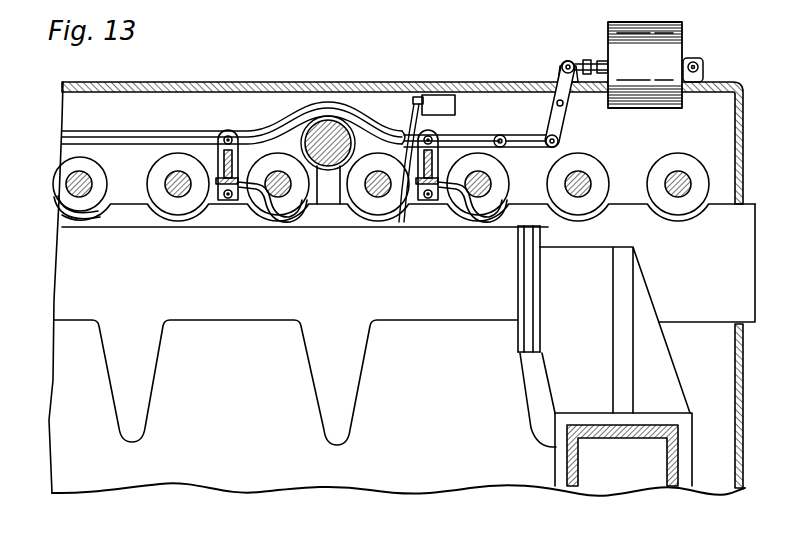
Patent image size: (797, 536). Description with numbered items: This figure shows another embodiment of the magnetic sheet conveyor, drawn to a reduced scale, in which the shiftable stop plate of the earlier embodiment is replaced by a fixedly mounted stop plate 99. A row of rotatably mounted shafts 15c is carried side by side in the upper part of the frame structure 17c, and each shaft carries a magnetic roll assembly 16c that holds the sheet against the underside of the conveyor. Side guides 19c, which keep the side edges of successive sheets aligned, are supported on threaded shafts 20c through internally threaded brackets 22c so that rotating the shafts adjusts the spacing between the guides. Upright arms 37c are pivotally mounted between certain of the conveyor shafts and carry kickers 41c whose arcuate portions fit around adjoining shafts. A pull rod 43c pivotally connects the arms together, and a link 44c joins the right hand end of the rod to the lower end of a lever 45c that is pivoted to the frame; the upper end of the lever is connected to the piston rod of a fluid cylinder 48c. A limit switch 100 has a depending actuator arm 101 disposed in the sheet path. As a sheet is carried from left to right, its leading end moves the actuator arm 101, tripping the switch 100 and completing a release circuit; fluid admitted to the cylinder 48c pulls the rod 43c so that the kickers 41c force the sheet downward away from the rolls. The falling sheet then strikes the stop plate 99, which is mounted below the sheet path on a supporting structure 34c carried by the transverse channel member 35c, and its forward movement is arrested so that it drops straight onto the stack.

The shaft 15c is at (70, 183).
The roll assembly 16c is at (113, 186).
The frame structure 17c is at (722, 78).
The side guide 19c is at (262, 300).
The shaft 20c is at (322, 128).
The bracket 22c is at (330, 188).
The supporting structure 34c is at (658, 307).
The channel member 35c is at (572, 453).
The upright arm 37c is at (220, 133).
The kicker 41c is at (262, 213).
The pull rod 43c is at (134, 140).
The link 44c is at (523, 136).
The lever 45c is at (563, 80).
The fluid cylinder 48c is at (668, 49).
The stop plate 99 is at (520, 262).
The limit switch 100 is at (443, 100).
The actuator arm 101 is at (408, 117).